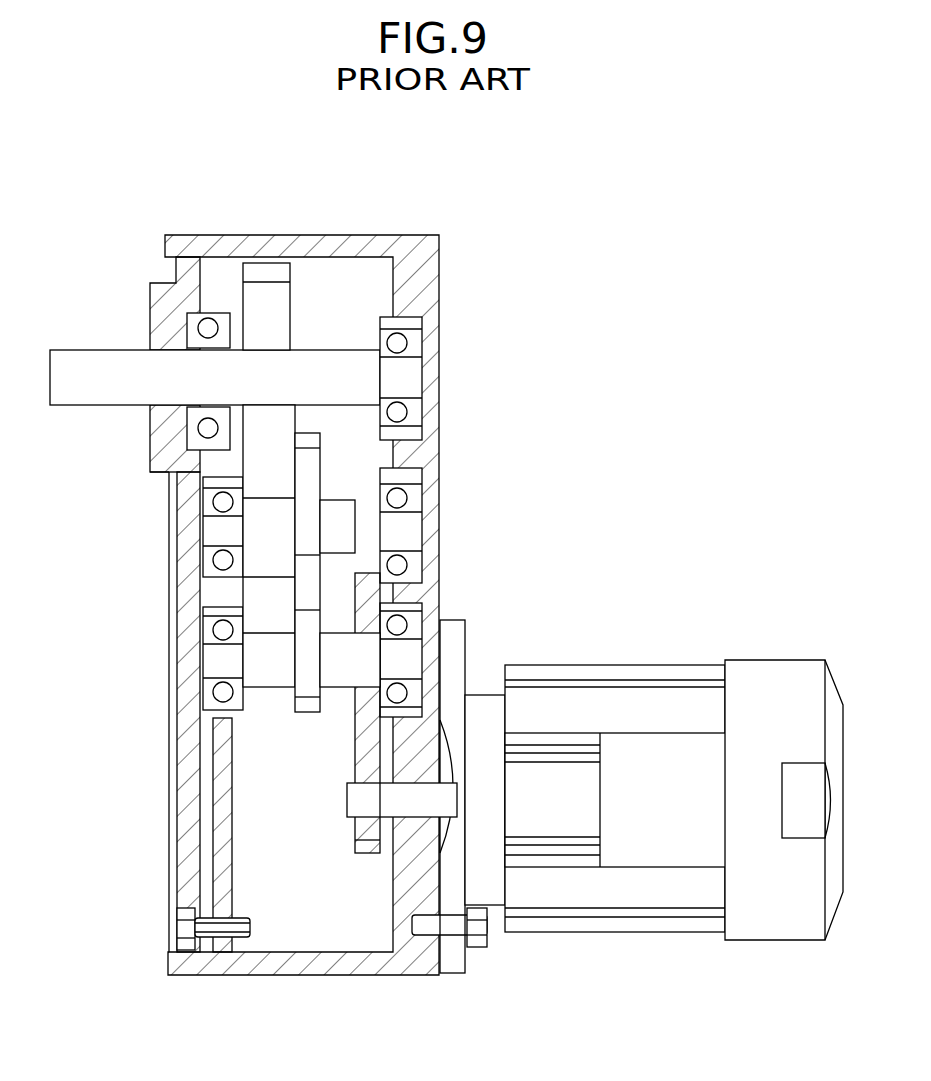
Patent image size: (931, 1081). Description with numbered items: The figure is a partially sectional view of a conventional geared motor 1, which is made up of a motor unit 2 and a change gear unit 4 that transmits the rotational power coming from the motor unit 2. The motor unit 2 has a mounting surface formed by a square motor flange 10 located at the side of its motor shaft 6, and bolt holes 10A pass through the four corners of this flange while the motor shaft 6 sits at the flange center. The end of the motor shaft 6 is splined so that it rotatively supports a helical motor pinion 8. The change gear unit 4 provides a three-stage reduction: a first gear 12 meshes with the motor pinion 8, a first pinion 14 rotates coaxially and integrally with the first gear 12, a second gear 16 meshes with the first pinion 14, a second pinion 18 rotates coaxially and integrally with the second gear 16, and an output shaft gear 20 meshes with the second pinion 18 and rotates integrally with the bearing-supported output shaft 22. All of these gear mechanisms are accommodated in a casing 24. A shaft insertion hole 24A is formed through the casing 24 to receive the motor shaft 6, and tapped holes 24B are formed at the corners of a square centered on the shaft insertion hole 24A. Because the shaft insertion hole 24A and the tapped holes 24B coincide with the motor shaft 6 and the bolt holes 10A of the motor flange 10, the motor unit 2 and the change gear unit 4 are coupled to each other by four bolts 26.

The geared motor 1 is at (585, 330).
The motor unit 2 is at (677, 663).
The change gear unit 4 is at (457, 278).
The motor shaft 6 is at (417, 810).
The motor pinion 8 is at (357, 833).
The motor flange 10 is at (452, 615).
The bolt hole 10A is at (485, 927).
The first gear 12 is at (367, 595).
The first pinion 14 is at (303, 685).
The second gear 16 is at (310, 583).
The second pinion 18 is at (270, 567).
The output shaft gear 20 is at (263, 292).
The output shaft 22 is at (90, 373).
The casing 24 is at (342, 237).
The shaft insertion hole 24A is at (428, 760).
The tapped hole 24B is at (450, 937).
The bolt 26 is at (487, 912).